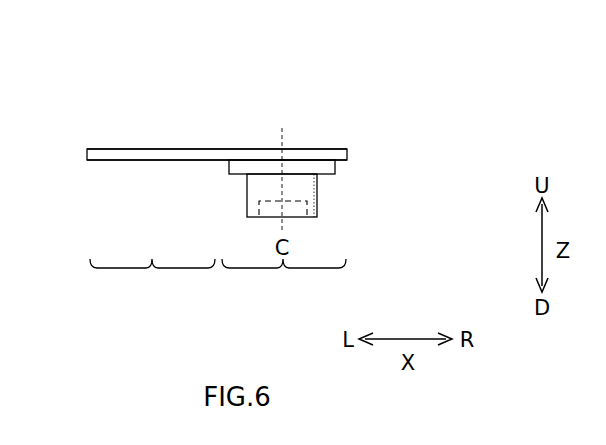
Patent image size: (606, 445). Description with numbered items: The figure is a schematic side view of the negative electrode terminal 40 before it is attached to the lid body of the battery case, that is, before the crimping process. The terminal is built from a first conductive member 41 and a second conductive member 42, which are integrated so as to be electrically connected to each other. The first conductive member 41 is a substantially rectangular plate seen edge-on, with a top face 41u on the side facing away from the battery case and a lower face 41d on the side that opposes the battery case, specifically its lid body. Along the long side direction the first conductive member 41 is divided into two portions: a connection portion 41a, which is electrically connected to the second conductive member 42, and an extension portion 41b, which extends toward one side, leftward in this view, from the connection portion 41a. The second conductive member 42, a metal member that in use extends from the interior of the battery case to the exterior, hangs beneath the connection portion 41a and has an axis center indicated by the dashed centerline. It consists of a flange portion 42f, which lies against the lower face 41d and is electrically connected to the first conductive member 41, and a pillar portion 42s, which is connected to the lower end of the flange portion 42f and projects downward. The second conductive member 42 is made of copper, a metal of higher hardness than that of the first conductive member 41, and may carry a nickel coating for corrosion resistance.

The negative electrode terminal 40 is at (323, 117).
The first conductive member 41 is at (112, 146).
The top face 41u is at (135, 149).
The lower face 41d is at (118, 161).
The connection portion 41a is at (284, 283).
The extension portion 41b is at (152, 283).
The second conductive member 42 is at (331, 186).
The flange portion 42f is at (229, 167).
The pillar portion 42s is at (253, 190).